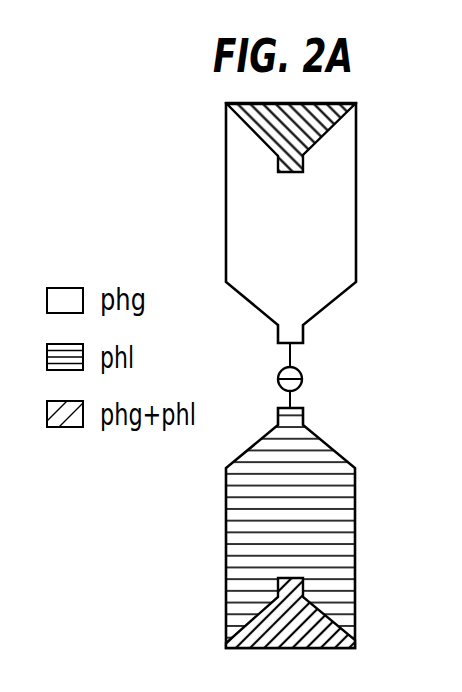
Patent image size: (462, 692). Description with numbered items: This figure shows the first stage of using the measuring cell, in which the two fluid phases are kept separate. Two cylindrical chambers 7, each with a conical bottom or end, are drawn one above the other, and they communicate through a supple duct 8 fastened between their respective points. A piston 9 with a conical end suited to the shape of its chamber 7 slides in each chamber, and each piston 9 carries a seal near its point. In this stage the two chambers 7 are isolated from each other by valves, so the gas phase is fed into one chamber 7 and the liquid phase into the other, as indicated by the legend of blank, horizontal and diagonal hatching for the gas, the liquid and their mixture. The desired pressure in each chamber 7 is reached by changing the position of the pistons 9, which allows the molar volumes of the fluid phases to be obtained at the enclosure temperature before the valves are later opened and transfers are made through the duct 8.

The cylindrical chamber 7 is at (338, 240).
The supple duct 8 is at (290, 355).
The piston 9 is at (356, 105).